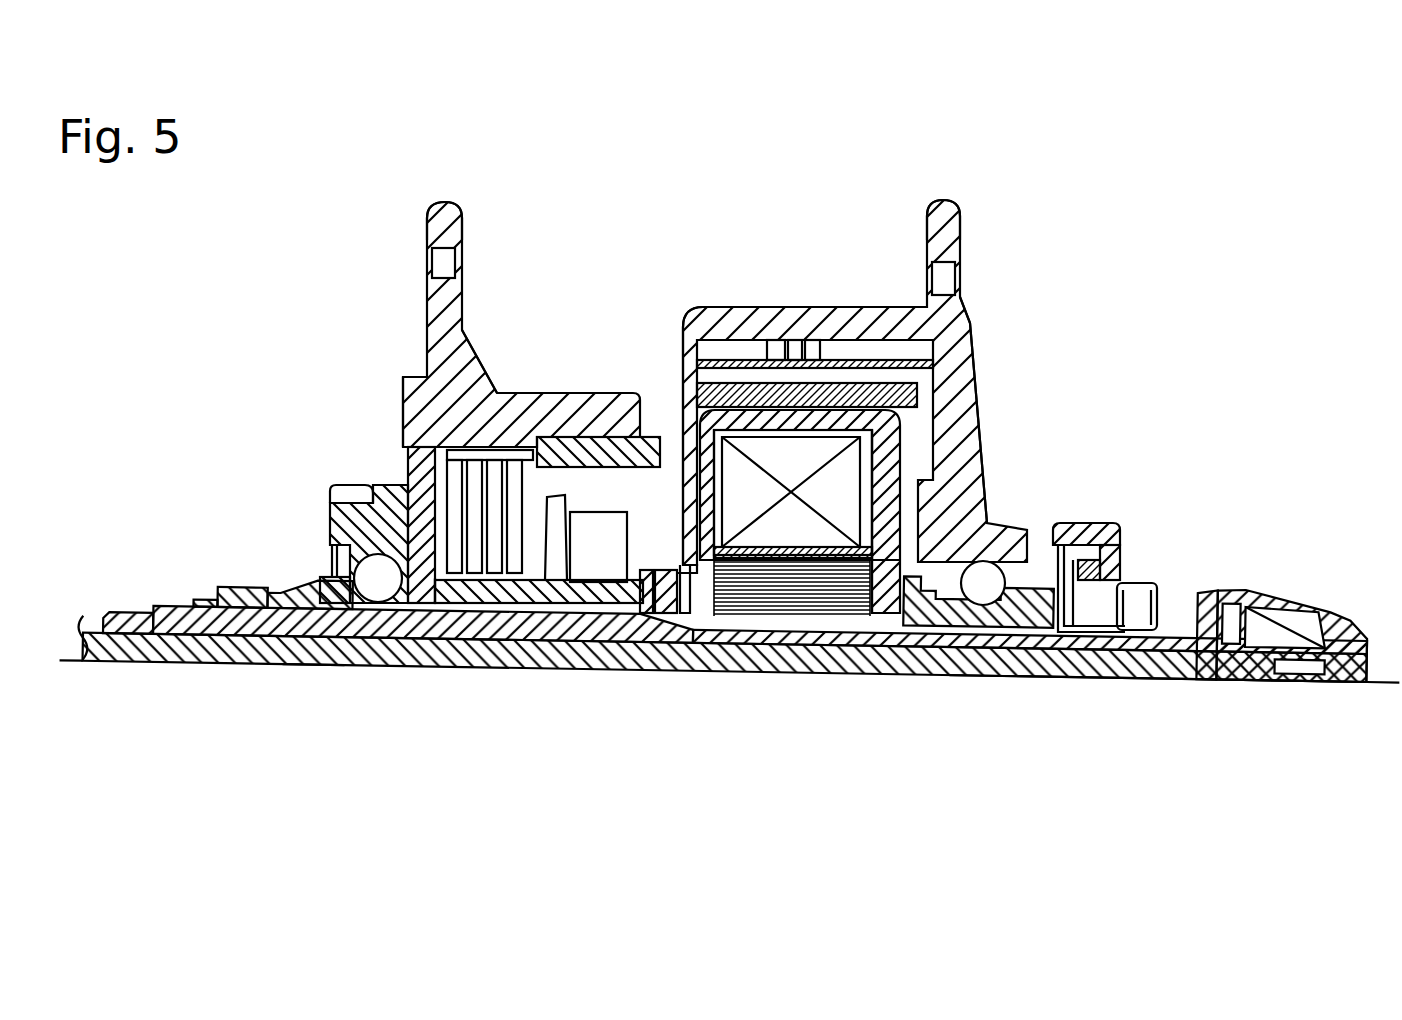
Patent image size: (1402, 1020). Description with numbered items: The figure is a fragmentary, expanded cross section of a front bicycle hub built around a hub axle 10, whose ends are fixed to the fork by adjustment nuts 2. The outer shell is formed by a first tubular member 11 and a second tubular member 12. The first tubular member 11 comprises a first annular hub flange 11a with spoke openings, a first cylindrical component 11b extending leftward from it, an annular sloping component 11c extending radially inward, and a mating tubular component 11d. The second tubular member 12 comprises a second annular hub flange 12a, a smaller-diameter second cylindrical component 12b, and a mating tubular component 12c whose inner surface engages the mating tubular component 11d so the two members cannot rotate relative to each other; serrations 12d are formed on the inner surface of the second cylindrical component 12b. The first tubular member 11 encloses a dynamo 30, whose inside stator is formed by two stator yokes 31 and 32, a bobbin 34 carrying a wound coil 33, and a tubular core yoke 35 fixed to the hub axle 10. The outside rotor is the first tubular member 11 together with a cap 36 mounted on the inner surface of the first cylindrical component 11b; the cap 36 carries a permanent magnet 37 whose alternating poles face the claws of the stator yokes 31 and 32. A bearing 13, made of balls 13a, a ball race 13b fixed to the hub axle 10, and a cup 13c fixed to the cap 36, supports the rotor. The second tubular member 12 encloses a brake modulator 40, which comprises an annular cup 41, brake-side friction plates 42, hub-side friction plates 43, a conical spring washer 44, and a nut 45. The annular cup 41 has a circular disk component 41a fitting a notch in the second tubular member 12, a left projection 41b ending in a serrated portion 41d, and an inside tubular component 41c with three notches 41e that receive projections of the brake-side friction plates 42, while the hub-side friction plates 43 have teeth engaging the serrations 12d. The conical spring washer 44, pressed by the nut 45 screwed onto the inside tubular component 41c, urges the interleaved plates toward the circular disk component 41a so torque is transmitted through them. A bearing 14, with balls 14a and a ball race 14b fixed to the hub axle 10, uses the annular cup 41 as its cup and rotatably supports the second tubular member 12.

The adjustment nut 2 is at (1312, 600).
The hub axle 10 is at (160, 652).
The first tubular member 11 is at (826, 301).
The first annular hub flange 11a is at (960, 232).
The first cylindrical component 11b is at (800, 307).
The annular sloping component 11c is at (665, 385).
The mating tubular component 11d is at (553, 455).
The second tubular member 12 is at (468, 222).
The second annular hub flange 12a is at (430, 220).
The second cylindrical component 12b is at (488, 422).
The mating tubular component 12c is at (597, 420).
The serrations 12d is at (527, 500).
The bearing 13 is at (918, 600).
The balls 13a is at (988, 595).
The ball race 13b is at (1042, 672).
The cup 13c is at (998, 520).
The bearing 14 is at (415, 640).
The balls 14a is at (345, 660).
The ball race 14b is at (285, 580).
The dynamo 30 is at (851, 680).
The stator yoke 31 is at (693, 600).
The stator yoke 32 is at (893, 425).
The coil 33 is at (800, 520).
The bobbin 34 is at (866, 545).
The tubular core yoke 35 is at (752, 593).
The cap 36 is at (984, 338).
The permanent magnet 37 is at (752, 385).
The brake modulator 40 is at (590, 678).
The annular cup 41 is at (330, 495).
The circular disk component 41a is at (362, 475).
The left projection 41b is at (330, 538).
The inside tubular component 41c is at (522, 600).
The serrated portion 41d is at (338, 483).
The notches 41e is at (442, 598).
The brake-side friction plates 42 is at (515, 575).
The hub-side friction plates 43 is at (437, 450).
The conical spring washer 44 is at (565, 548).
The nut 45 is at (632, 622).